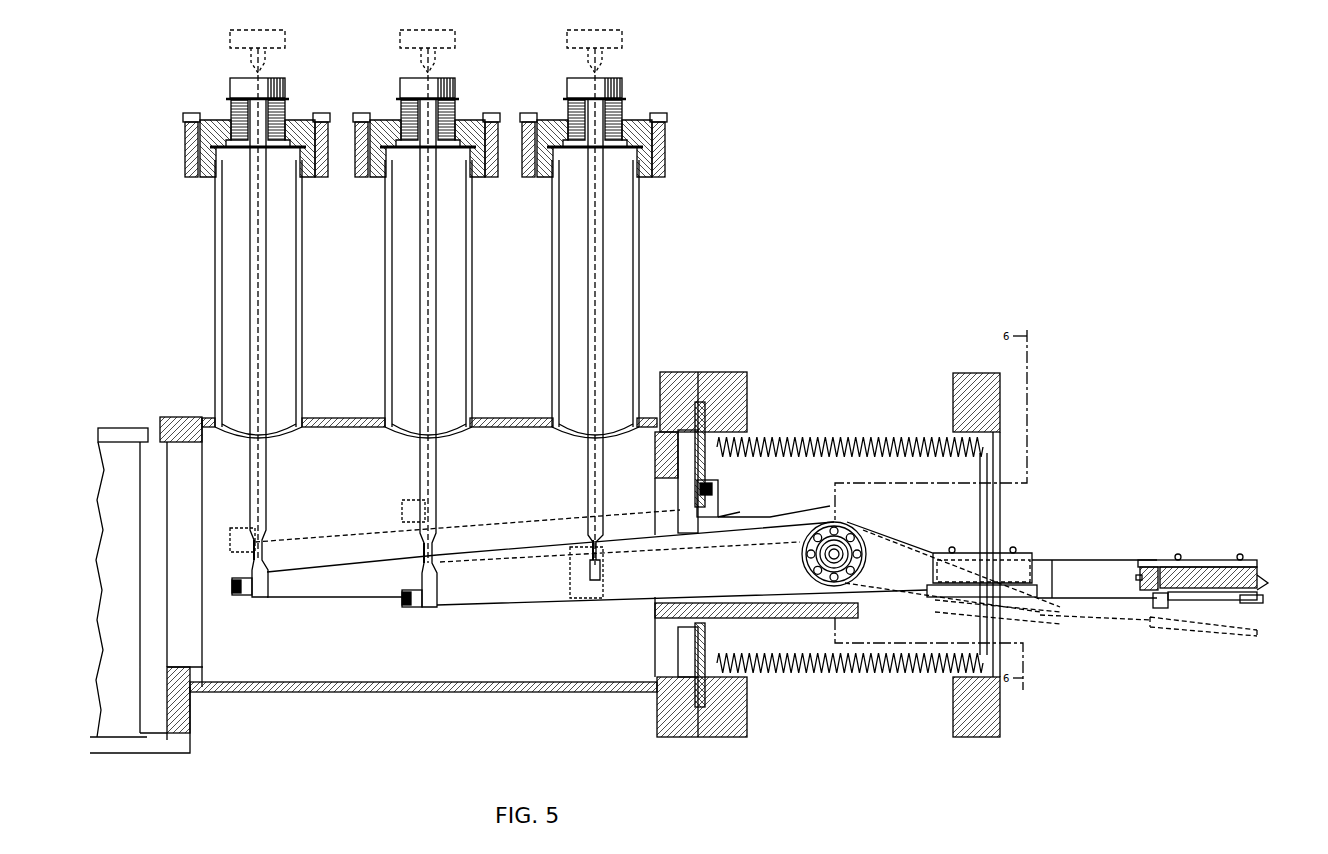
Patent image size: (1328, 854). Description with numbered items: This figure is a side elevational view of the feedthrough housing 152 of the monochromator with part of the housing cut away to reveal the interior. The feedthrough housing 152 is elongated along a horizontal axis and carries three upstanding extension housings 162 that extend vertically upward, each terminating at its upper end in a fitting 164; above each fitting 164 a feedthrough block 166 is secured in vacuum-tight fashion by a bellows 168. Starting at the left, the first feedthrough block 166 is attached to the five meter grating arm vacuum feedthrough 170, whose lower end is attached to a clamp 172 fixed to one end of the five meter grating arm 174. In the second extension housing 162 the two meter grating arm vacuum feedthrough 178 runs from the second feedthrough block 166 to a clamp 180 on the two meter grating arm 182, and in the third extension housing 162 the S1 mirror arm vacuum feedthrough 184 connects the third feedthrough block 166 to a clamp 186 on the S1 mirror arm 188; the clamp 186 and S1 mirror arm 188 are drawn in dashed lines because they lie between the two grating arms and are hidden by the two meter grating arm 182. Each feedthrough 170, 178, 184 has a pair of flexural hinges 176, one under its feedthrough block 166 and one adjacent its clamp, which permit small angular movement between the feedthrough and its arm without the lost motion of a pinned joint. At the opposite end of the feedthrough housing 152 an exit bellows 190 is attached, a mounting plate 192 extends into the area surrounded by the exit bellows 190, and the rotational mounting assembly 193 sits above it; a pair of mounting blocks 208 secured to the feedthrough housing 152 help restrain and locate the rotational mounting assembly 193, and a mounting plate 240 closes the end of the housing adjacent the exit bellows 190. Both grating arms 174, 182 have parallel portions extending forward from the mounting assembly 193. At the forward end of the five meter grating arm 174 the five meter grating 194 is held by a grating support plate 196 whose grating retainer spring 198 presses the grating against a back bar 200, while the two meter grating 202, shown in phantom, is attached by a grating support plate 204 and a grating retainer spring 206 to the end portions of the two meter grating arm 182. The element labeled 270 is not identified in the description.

The feedthrough housing 152 is at (460, 692).
The extension housing 162 is at (302, 327).
The fitting 164 is at (296, 125).
The feedthrough block 166 is at (288, 80).
The bellows 168 is at (568, 110).
The five meter grating arm vacuum feedthrough 170 is at (256, 248).
The clamp 172 is at (258, 597).
The five meter grating arm 174 is at (334, 586).
The flexural hinge 176 is at (232, 110).
The two meter grating arm vacuum feedthrough 178 is at (426, 248).
The clamp 180 is at (425, 607).
The two meter grating arm 182 is at (512, 597).
The S1 mirror arm vacuum feedthrough 184 is at (593, 248).
The clamp 186 is at (586, 587).
The S1 mirror arm 188 is at (614, 593).
The exit bellows 190 is at (852, 436).
The mounting plate 192 is at (805, 618).
The rotational mounting assembly 193 is at (875, 522).
The five meter grating 194 is at (1215, 575).
The grating support plate 196 is at (1255, 603).
The grating retainer spring 198 is at (1270, 585).
The back bar 200 is at (1155, 567).
The two meter grating 202 is at (975, 575).
The grating support plate 204 is at (967, 597).
The grating retainer spring 206 is at (1040, 568).
The mounting block 208 is at (718, 500).
The mounting plate 240 is at (684, 370).
The wedge 270 is at (740, 515).